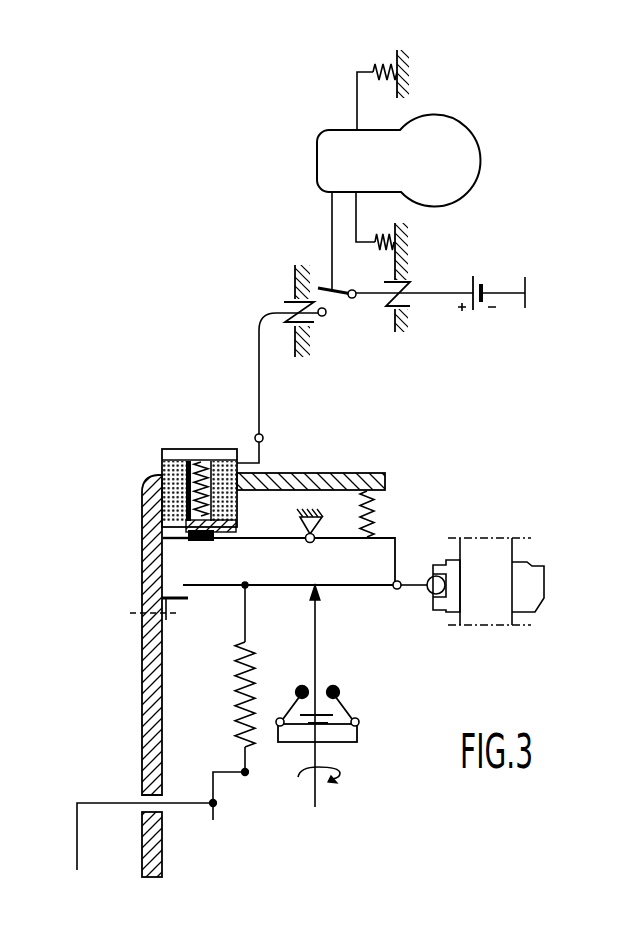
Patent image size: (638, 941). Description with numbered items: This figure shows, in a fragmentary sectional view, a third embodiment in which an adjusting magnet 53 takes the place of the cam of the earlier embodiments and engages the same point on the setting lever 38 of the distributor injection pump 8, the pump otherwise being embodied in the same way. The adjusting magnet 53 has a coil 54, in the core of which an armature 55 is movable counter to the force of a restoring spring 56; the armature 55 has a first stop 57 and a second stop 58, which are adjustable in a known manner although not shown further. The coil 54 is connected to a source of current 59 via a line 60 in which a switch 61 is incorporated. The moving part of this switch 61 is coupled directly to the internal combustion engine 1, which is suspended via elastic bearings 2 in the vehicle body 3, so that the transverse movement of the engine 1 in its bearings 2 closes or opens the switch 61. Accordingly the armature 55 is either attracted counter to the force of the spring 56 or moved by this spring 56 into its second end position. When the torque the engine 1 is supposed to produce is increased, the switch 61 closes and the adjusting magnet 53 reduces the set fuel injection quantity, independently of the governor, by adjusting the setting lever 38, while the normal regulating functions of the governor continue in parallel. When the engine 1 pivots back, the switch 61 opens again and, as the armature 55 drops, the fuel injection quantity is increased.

The internal combustion engine 1 is at (336, 141).
The elastic bearings 2 is at (384, 70).
The body 3 is at (408, 72).
The distributor injection pump 8 is at (130, 659).
The setting lever 38 is at (284, 540).
The adjusting magnet 53 is at (188, 446).
The coil 54 is at (160, 477).
The armature 55 is at (190, 537).
The restoring spring 56 is at (200, 461).
The first stop 57 is at (169, 454).
The second stop 58 is at (162, 529).
The source of current 59 is at (481, 316).
The line 60 is at (259, 356).
The switch 61 is at (350, 306).